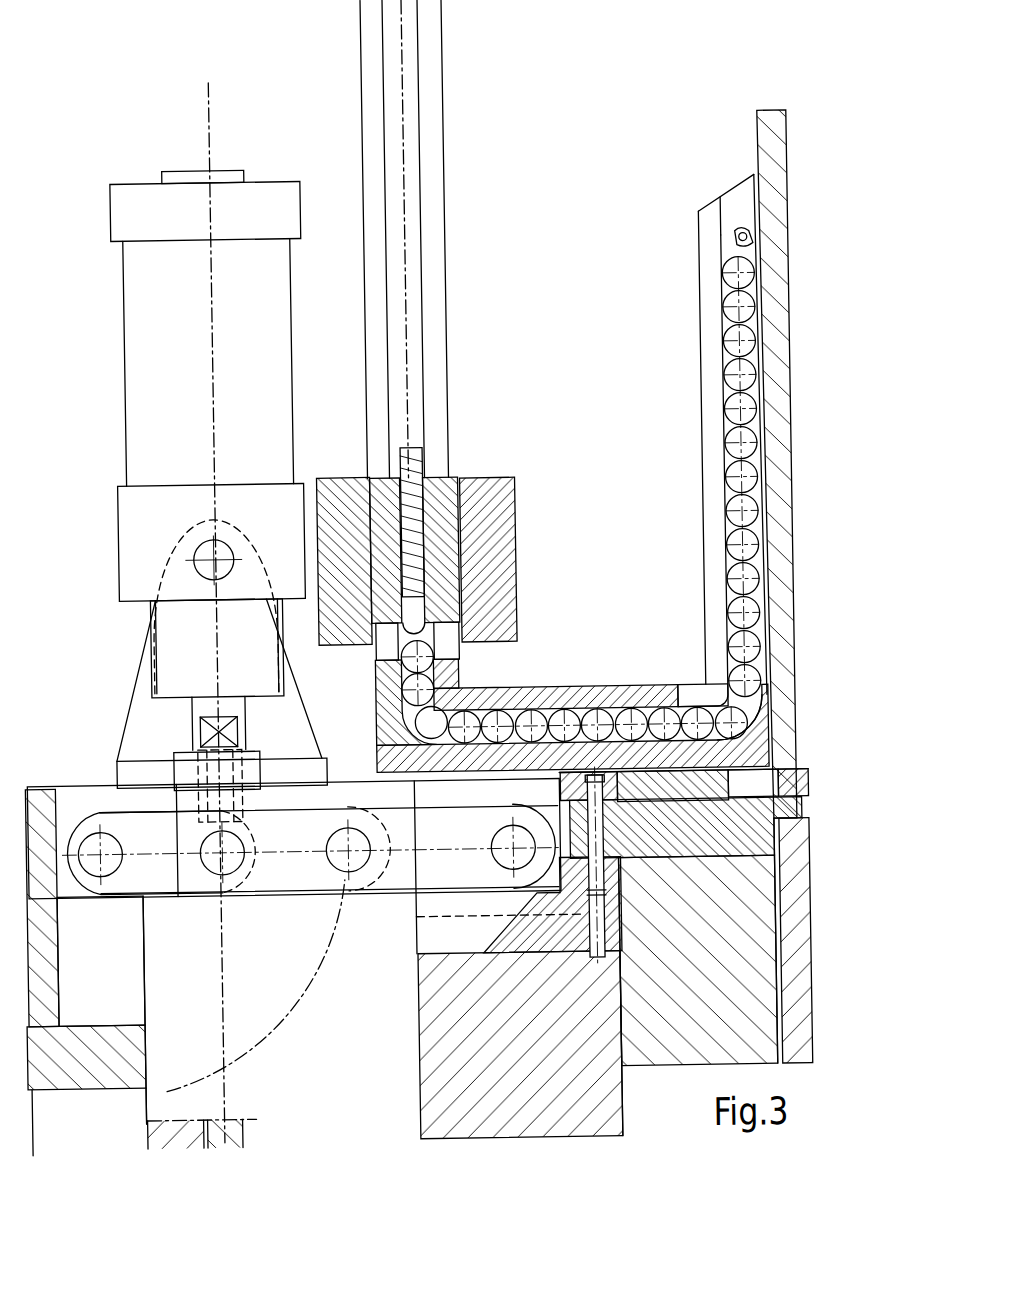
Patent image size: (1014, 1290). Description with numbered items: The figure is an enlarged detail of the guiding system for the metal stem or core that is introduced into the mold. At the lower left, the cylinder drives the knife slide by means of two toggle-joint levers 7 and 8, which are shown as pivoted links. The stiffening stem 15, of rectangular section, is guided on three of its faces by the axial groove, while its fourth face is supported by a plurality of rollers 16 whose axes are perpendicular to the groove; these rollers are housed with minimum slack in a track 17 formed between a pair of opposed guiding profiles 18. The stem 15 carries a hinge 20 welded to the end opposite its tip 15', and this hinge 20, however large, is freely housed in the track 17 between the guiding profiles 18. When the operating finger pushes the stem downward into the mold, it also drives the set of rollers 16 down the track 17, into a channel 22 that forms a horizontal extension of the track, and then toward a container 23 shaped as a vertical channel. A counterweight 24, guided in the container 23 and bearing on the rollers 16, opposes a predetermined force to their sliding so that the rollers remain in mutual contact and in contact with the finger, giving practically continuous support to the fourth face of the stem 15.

The toggle-joint lever 7 is at (400, 878).
The toggle-joint lever 8 is at (154, 880).
The stiffening stem 15 is at (568, 473).
The tip of the stem 15' is at (571, 679).
The rollers 16 is at (745, 416).
The track 17 is at (746, 208).
The guiding profiles 18 is at (713, 285).
The hinge 20 is at (746, 244).
The channel 22 is at (545, 712).
The container 23 is at (442, 384).
The counterweight 24 is at (510, 586).